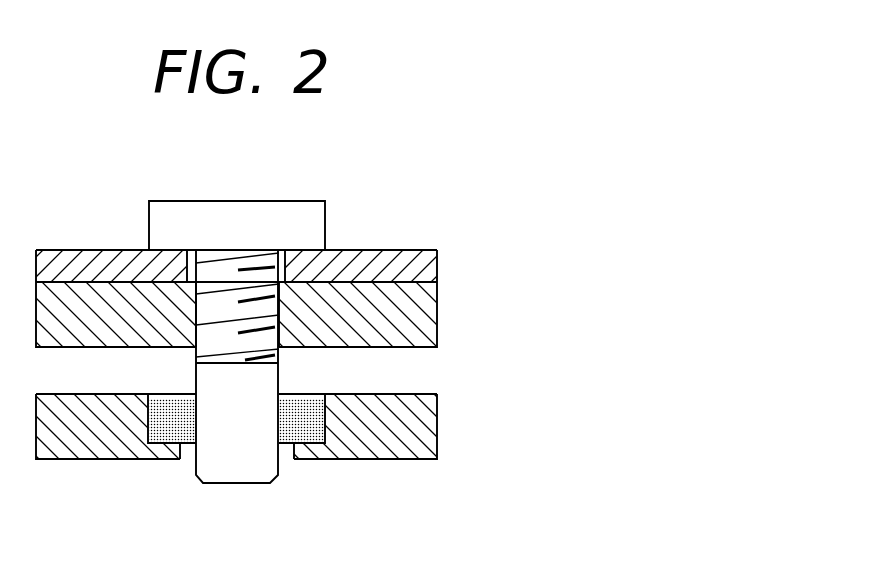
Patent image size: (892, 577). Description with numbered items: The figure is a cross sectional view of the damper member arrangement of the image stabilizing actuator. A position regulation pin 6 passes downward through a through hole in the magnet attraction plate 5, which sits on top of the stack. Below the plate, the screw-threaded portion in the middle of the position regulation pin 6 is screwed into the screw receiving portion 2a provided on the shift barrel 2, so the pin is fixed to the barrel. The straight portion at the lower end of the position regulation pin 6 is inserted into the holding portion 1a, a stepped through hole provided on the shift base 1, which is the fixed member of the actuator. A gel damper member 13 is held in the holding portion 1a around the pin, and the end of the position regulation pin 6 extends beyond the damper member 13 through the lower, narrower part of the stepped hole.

The shift base 1 is at (430, 425).
The holding portion 1a is at (313, 428).
The shift barrel 2 is at (430, 317).
The screw receiving portion 2a is at (196, 297).
The magnet attraction plate 5 is at (432, 265).
The position regulation pin 6 is at (237, 452).
The gel damper member 13 is at (170, 430).